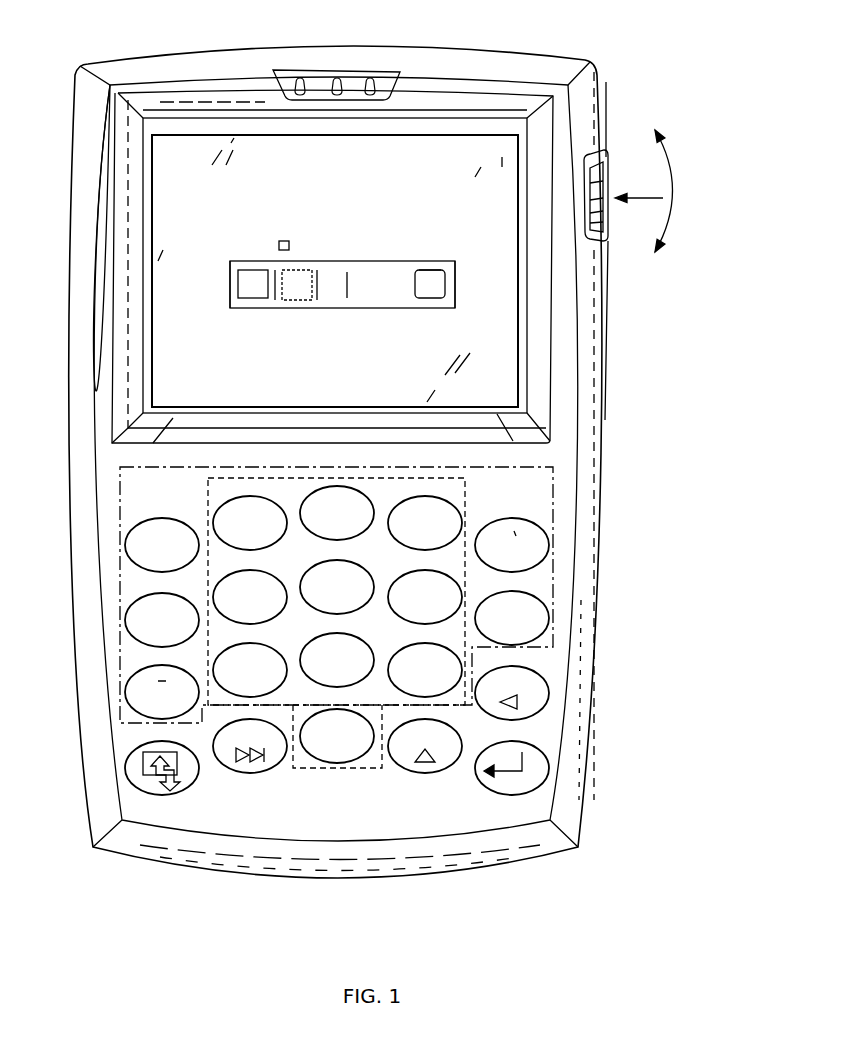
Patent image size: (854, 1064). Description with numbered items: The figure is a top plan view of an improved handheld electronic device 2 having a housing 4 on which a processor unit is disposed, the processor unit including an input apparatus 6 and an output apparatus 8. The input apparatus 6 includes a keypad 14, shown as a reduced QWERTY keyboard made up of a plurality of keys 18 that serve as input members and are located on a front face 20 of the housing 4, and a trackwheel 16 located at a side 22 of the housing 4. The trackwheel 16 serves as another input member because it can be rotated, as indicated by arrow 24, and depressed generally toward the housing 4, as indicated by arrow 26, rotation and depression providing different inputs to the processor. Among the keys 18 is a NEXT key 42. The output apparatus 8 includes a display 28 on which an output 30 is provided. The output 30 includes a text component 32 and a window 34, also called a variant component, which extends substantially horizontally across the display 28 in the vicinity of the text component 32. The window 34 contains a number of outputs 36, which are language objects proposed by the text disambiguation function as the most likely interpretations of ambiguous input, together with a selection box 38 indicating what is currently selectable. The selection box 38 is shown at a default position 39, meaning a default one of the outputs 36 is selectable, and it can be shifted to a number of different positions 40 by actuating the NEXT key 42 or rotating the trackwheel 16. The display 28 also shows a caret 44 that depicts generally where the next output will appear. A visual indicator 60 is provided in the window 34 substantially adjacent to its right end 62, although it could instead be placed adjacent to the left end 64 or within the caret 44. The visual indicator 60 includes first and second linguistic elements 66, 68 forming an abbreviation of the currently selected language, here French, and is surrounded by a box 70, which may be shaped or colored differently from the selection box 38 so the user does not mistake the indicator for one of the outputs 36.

The handheld electronic device 2 is at (380, 446).
The housing 4 is at (507, 53).
The input apparatus 6 is at (348, 578).
The output apparatus 8 is at (332, 230).
The keypad 14 is at (558, 585).
The trackwheel 16 is at (598, 183).
The keys 18 is at (357, 648).
The front face 20 is at (112, 769).
The side 22 is at (619, 238).
The arrow 24 is at (675, 178).
The arrow 26 is at (647, 197).
The display 28 is at (460, 163).
The output 30 is at (245, 221).
The text component 32 is at (268, 238).
The window 34 is at (348, 436).
The outputs 36 is at (355, 294).
The selection box 38 is at (257, 300).
The default position 39 is at (252, 310).
The different positions 40 is at (298, 268).
The NEXT key 42 is at (262, 773).
The caret 44 is at (288, 240).
The visual indicator 60 is at (444, 288).
The right end 62 is at (457, 264).
The left end 64 is at (230, 269).
The first linguistic element 66 is at (427, 299).
The second linguistic element 68 is at (433, 299).
The box 70 is at (418, 268).